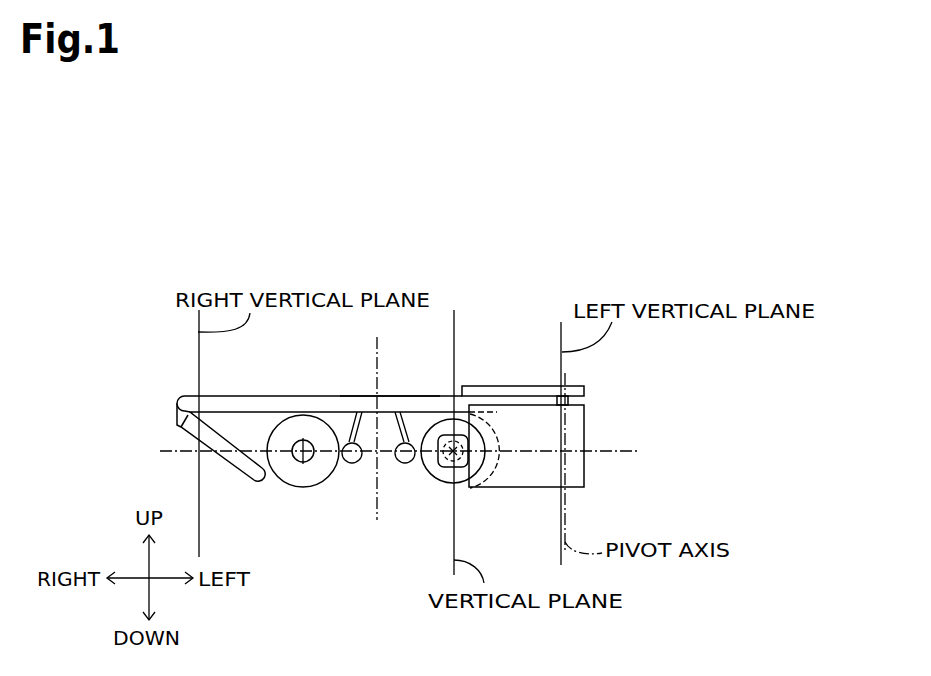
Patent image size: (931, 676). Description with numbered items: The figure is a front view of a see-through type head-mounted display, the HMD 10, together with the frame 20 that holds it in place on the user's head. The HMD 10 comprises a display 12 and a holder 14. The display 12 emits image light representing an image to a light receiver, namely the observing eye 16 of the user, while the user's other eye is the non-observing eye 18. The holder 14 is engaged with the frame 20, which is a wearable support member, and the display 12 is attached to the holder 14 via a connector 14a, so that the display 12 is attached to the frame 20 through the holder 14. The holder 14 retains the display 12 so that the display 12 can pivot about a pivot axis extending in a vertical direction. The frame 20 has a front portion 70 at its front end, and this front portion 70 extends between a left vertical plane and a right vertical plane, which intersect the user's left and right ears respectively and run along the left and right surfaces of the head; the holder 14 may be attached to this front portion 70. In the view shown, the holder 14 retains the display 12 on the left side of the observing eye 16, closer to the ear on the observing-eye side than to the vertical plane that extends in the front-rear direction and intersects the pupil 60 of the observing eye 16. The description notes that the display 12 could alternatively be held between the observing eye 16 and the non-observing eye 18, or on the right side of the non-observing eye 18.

The HMD 10 is at (598, 496).
The display 12 is at (526, 478).
The holder 14 is at (573, 390).
The connector 14a is at (573, 401).
The observing eye 16 is at (450, 477).
The non-observing eye 18 is at (288, 472).
The frame 20 is at (232, 390).
The pupil 60 is at (312, 457).
The front portion 70 is at (417, 405).